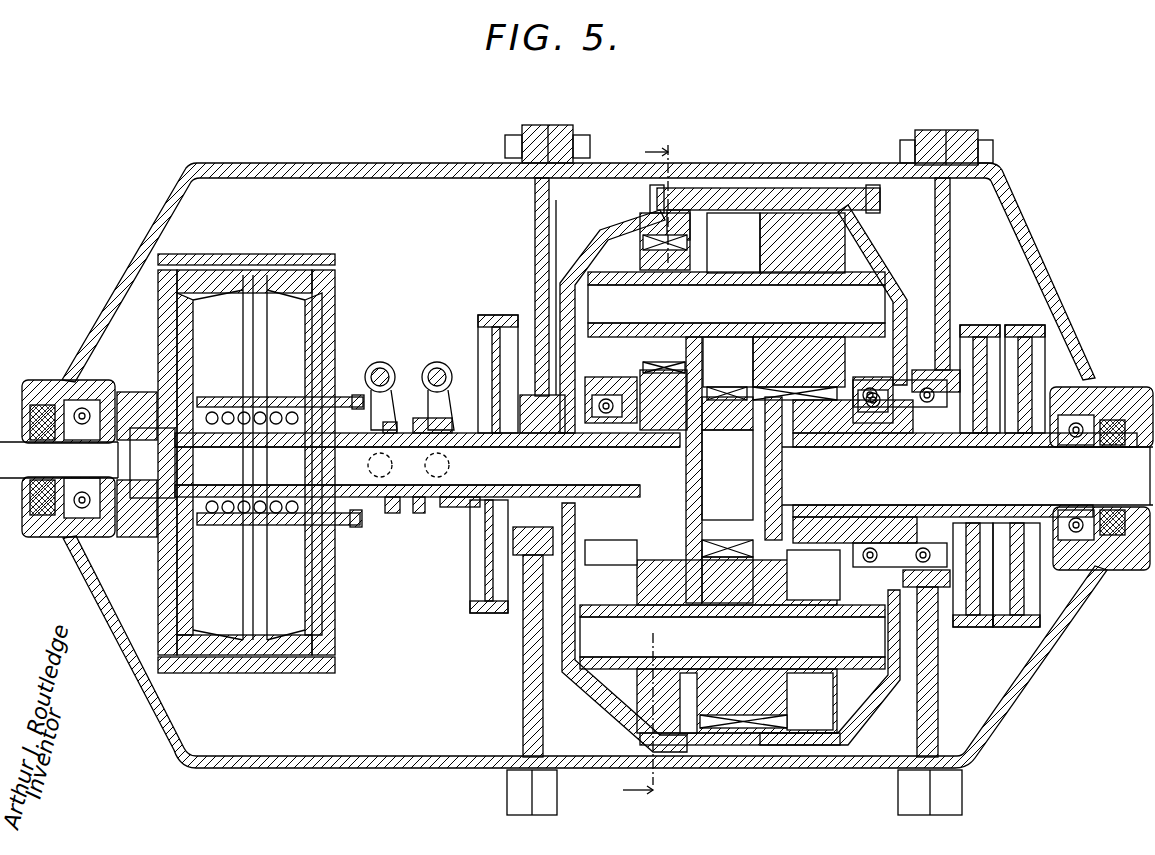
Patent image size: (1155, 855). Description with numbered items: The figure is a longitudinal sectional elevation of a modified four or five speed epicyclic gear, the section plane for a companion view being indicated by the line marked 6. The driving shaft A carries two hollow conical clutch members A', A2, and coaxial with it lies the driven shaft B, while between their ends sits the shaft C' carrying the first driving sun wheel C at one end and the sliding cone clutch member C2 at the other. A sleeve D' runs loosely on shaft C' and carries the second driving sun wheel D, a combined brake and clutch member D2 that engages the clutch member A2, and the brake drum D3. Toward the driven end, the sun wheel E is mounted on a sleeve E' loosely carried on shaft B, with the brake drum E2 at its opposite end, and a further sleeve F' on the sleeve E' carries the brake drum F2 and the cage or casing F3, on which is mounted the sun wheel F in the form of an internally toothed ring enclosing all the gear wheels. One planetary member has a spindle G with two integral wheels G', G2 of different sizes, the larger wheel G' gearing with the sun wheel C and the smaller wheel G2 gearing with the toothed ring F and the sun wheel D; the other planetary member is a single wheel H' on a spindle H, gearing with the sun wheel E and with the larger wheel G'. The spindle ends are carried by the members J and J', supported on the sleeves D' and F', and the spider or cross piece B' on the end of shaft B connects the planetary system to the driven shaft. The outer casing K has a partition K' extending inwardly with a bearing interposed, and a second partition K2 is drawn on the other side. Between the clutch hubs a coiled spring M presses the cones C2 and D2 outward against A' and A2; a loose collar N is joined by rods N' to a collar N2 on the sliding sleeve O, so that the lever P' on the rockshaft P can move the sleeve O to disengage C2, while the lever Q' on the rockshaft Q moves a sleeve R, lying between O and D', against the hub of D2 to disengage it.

The driving shaft A is at (59, 460).
The clutch member A' is at (206, 463).
The clutch member A2 is at (317, 653).
The driven shaft B is at (967, 476).
The spider or cross piece B' is at (797, 468).
The first driving sun wheel C is at (727, 500).
The shaft C' is at (405, 463).
The clutch member C2 is at (205, 636).
The second driving sun wheel D is at (649, 470).
The sleeve D' is at (460, 529).
The clutch member D2 is at (285, 637).
The brake drum D3 is at (493, 333).
The sun wheel E is at (943, 520).
The sleeve E' is at (965, 445).
The brake drum E2 is at (1037, 330).
The toothed ring F is at (765, 187).
The sleeve F' is at (996, 552).
The brake drum F2 is at (990, 330).
The cage or casing F3 is at (877, 230).
The spindle G is at (732, 641).
The planet wheel G' is at (740, 765).
The planet wheel G2 is at (647, 680).
The spindle H is at (736, 321).
The planetary wheel H' is at (725, 204).
The carrier member J is at (584, 321).
The carrier member J' is at (866, 667).
The outer casing K is at (587, 463).
The partition K' is at (559, 305).
The casing partition K2 is at (950, 250).
The coiled spring M is at (257, 417).
The loose collar N is at (278, 488).
The rods N' is at (280, 470).
The loose collar N2 is at (353, 540).
The sliding sleeve O is at (390, 513).
The rockshaft P is at (381, 377).
The lever P' is at (393, 407).
The rockshaft Q is at (438, 379).
The lever Q' is at (443, 409).
The sleeve R is at (443, 507).
The section line 6 is at (645, 473).